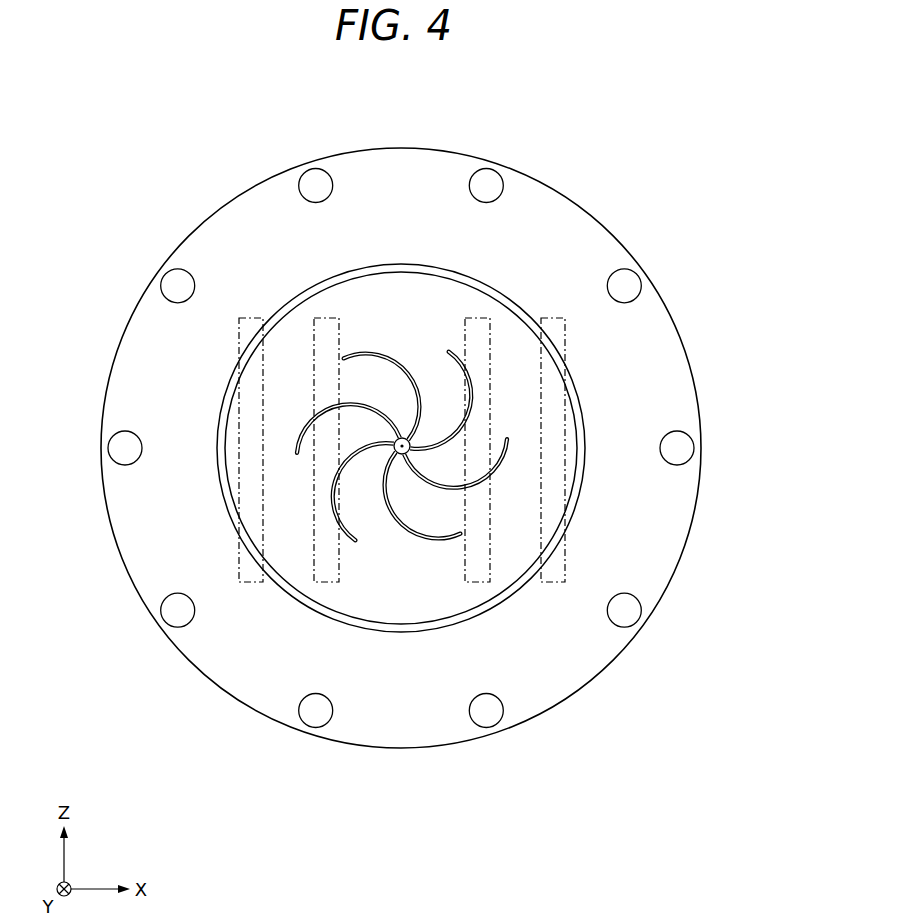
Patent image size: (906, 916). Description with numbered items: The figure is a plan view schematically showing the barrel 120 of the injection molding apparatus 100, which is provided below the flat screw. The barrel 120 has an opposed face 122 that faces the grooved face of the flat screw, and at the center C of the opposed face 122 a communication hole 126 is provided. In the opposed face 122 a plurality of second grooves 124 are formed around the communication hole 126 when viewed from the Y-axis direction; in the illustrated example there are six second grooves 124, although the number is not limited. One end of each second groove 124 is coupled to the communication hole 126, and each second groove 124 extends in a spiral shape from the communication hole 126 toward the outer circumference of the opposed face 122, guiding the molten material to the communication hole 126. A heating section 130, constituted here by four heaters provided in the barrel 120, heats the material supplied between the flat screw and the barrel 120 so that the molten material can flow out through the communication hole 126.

The pump device 100 is at (439, 459).
The barrel 120 is at (662, 160).
The opposed face 122 is at (439, 616).
The second groove 124 is at (391, 358).
The communication hole 126 is at (394, 454).
The heating section 130 is at (253, 318).
The center C is at (410, 446).